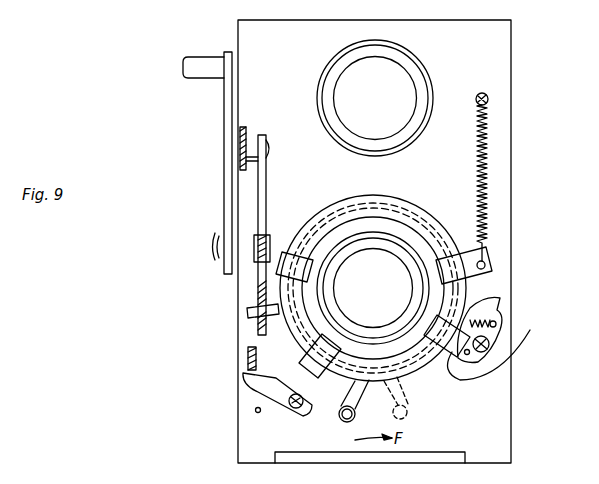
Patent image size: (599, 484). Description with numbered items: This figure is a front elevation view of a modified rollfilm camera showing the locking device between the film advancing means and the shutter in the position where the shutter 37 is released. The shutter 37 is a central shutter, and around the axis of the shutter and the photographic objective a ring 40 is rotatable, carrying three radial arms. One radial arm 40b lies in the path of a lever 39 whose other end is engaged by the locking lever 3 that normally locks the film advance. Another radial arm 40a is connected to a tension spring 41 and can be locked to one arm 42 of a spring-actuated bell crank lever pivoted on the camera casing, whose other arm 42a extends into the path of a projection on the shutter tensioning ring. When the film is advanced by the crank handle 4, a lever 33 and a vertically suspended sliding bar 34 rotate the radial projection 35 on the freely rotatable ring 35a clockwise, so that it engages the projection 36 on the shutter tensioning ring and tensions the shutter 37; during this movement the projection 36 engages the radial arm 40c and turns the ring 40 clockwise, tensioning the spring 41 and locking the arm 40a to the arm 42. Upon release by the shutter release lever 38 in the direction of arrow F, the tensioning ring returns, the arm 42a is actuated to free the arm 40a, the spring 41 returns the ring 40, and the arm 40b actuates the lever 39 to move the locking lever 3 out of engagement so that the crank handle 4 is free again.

The locking lever 3 is at (248, 357).
The crank handle 4 is at (224, 158).
The lever 33 is at (255, 247).
The bar 34 is at (264, 290).
The radial projection 35 is at (325, 312).
The ring 35a is at (462, 378).
The projection 36 is at (262, 278).
The shutter 37 is at (380, 203).
The shutter release lever 38 is at (346, 422).
The lever 39 is at (270, 397).
The ring 40 is at (400, 347).
The radial arm 40a is at (486, 246).
The radial arm 40b is at (260, 388).
The radial arm 40c is at (295, 246).
The tension spring 41 is at (485, 175).
The arm of bell crank lever 42 is at (502, 320).
The arm of bell crank lever 42a is at (487, 306).